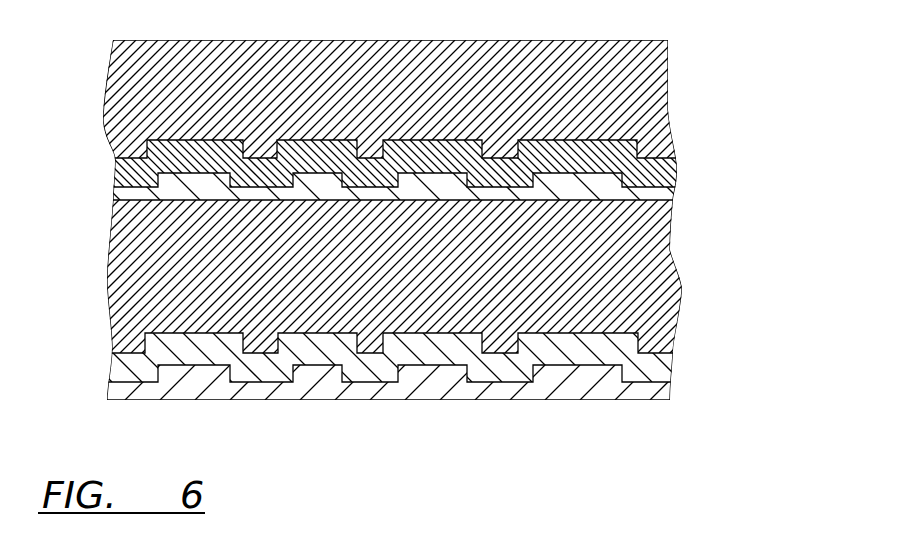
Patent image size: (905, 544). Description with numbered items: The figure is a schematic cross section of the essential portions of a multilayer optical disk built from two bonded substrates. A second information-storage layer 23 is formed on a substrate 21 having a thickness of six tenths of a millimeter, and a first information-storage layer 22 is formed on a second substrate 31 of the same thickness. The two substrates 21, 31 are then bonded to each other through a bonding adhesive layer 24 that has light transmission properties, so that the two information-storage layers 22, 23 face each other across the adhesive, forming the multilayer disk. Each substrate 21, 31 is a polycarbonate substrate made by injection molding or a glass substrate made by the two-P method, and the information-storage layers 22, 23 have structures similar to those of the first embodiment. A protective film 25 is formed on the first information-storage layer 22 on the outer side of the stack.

The substrate 21 is at (617, 100).
The second information-storage layer 23 is at (648, 178).
The bonding adhesive layer 24 is at (596, 188).
The second substrate 31 is at (636, 280).
The first information-storage layer 22 is at (648, 372).
The protective film 25 is at (648, 390).